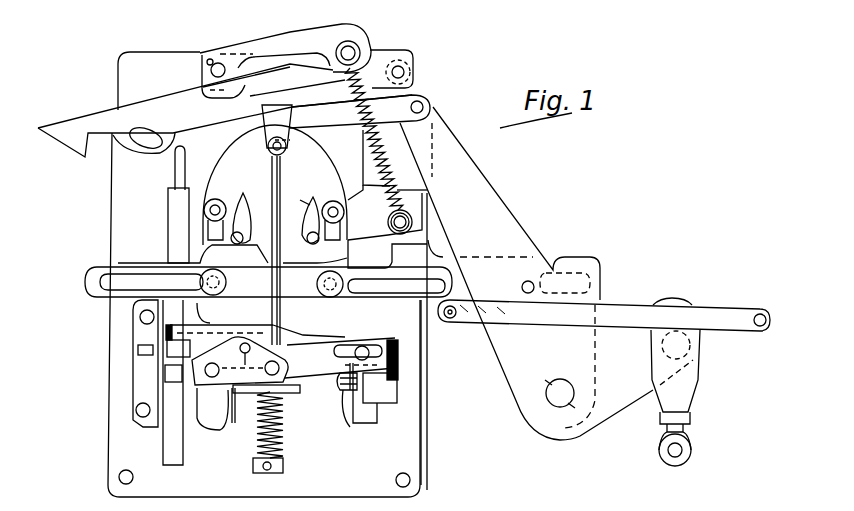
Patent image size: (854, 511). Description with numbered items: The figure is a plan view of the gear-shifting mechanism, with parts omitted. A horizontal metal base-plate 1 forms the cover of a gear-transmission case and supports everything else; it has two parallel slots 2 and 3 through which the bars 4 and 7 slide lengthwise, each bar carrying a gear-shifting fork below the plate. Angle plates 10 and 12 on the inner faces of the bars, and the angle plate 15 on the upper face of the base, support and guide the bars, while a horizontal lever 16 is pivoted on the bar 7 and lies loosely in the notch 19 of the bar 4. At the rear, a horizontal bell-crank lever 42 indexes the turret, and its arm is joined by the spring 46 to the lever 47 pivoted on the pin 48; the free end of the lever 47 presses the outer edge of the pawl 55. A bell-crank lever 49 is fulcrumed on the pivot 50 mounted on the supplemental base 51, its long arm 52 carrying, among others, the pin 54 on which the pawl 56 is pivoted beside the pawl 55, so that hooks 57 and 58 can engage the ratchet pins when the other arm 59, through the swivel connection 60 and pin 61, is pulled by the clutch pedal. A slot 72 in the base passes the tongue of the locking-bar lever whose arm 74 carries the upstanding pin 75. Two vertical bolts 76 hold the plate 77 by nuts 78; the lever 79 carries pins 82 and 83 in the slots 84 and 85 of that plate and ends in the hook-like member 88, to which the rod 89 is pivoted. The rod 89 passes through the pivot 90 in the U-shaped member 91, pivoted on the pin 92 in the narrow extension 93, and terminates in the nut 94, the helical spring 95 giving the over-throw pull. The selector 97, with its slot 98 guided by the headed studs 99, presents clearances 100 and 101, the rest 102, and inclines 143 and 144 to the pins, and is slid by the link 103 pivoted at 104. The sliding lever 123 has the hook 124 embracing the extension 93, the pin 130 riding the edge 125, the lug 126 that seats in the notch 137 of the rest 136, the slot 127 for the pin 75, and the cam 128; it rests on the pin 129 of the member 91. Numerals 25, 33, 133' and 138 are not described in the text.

The base-plate 1 is at (264, 274).
The slot 2 is at (175, 176).
The slot 3 is at (378, 417).
The bar 4 is at (178, 225).
The bar 7 is at (395, 163).
The angle plate 10 is at (212, 409).
The angle plate 12 is at (354, 401).
The angle plate 15 is at (154, 382).
The horizontal lever 16 is at (178, 348).
The notch 19 is at (174, 374).
The arm recess 25 is at (284, 65).
The pivot 33 is at (405, 72).
The horizontal bell-crank lever 42 is at (385, 212).
The spring 46 is at (393, 198).
The lever 47 is at (268, 42).
The pin 48 is at (217, 63).
The bell-crank lever 49 is at (563, 438).
The pivot 50 is at (551, 385).
The supplemental base 51 is at (475, 394).
The long arm 52 is at (500, 255).
The pin 54 is at (424, 106).
The pawl 55 is at (379, 54).
The pawl 56 is at (436, 112).
The hook 57 is at (57, 139).
The hook 58 is at (113, 156).
The arm 59 is at (616, 382).
The swivel connection 60 is at (699, 378).
The pin 61 is at (698, 351).
The slot 72 is at (300, 396).
The arm 74 is at (387, 254).
The pin or pivot 75 is at (384, 353).
The vertical bolts 76 is at (217, 200).
The plate 77 is at (275, 185).
The nuts 78 is at (274, 233).
The lever 79 is at (299, 195).
The stud or pin 82 is at (193, 254).
The stud or pin 83 is at (315, 258).
The slot 84 is at (243, 195).
The slot 85 is at (312, 200).
The hook-like member 88 is at (287, 146).
The rod 89 is at (270, 163).
The pivot 90 is at (297, 353).
The U-shaped member 91 is at (242, 405).
The pin 92 is at (230, 422).
The narrow extension 93 is at (207, 428).
The nut 94 is at (284, 467).
The helical spring 95 is at (287, 423).
The selector 97 is at (88, 279).
The longitudinal slot 98 is at (400, 285).
The headed studs 99 is at (228, 283).
The clearance 100 is at (133, 263).
The clearance 101 is at (427, 260).
The rest 102 is at (260, 244).
The link 103 is at (555, 323).
The pivot 104 is at (434, 320).
The longitudinally-sliding lever 123 is at (309, 326).
The hook 124 is at (167, 333).
The forward edge 125 is at (303, 348).
The lug 126 is at (221, 318).
The slot 127 is at (393, 337).
The cam 128 is at (398, 393).
The vertical pin 129 is at (242, 363).
The pendent pin 130 is at (267, 325).
The cam 133' is at (148, 120).
The rest 136 is at (428, 345).
The notch 137 is at (357, 331).
The stop 138 is at (138, 350).
The inclination 143 is at (333, 262).
The incline 144 is at (210, 250).